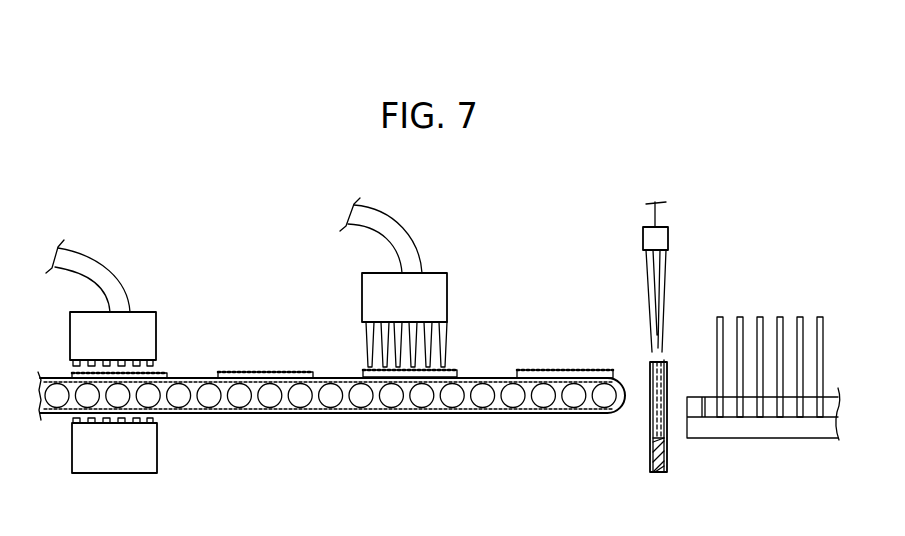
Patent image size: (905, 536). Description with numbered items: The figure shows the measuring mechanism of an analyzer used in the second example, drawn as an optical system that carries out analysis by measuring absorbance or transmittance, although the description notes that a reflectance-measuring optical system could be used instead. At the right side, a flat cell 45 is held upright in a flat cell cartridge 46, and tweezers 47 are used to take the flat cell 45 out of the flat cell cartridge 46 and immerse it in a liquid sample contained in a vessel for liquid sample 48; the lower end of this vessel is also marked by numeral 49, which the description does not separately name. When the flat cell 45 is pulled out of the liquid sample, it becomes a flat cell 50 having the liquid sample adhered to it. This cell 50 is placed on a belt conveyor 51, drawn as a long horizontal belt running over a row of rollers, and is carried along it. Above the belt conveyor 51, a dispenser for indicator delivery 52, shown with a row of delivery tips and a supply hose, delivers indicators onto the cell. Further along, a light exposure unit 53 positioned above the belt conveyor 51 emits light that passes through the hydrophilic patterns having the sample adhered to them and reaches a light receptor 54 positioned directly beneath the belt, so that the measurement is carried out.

The flat cell 45 is at (721, 317).
The flat cell cartridge 46 is at (770, 428).
The tweezers 47 is at (668, 238).
The vessel for liquid sample 48 is at (668, 470).
The tube tip 49 is at (655, 474).
The flat cell having the liquid sample adhered thereto 50 is at (575, 370).
The belt conveyor 51 is at (494, 377).
The dispenser for indicator delivery 52 is at (393, 282).
The light exposure unit 53 is at (101, 303).
The light receptor 54 is at (114, 445).